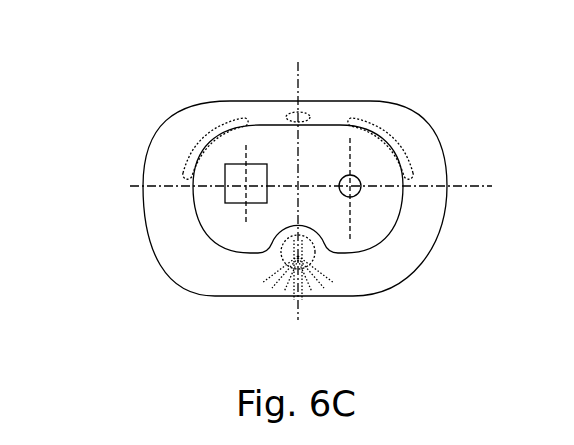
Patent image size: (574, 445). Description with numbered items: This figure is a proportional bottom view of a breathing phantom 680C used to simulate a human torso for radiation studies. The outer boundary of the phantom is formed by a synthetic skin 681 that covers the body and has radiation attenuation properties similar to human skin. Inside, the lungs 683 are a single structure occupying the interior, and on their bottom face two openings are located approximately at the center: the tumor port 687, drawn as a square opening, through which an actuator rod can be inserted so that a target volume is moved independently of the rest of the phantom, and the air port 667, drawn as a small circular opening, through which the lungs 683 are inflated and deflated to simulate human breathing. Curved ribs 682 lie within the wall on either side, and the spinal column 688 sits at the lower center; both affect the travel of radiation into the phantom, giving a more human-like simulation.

The phantom 680C is at (325, 103).
The synthetic skin 681 is at (258, 107).
The ribs 682 is at (382, 132).
The lungs 683 is at (268, 144).
The tumor port 687 is at (225, 202).
The air port 667 is at (355, 191).
The spinal column 688 is at (308, 256).